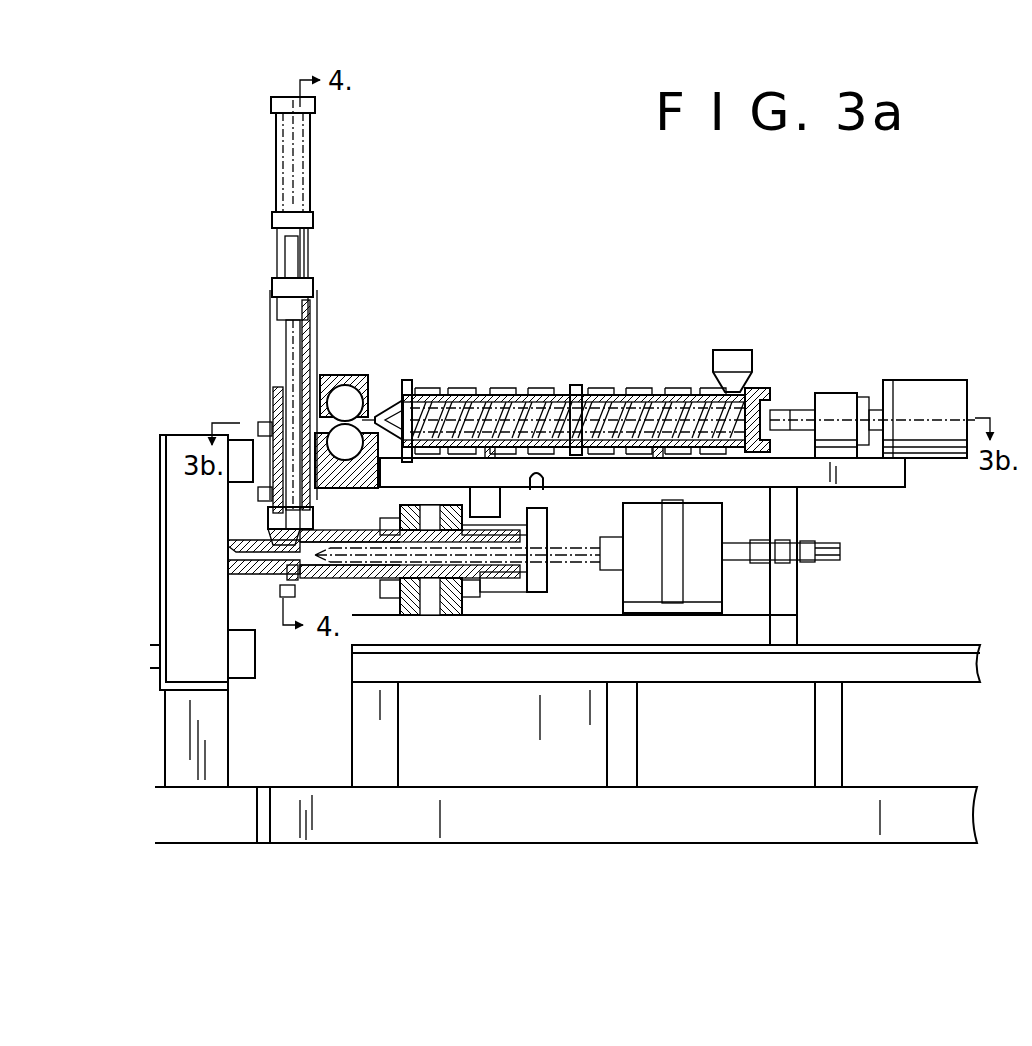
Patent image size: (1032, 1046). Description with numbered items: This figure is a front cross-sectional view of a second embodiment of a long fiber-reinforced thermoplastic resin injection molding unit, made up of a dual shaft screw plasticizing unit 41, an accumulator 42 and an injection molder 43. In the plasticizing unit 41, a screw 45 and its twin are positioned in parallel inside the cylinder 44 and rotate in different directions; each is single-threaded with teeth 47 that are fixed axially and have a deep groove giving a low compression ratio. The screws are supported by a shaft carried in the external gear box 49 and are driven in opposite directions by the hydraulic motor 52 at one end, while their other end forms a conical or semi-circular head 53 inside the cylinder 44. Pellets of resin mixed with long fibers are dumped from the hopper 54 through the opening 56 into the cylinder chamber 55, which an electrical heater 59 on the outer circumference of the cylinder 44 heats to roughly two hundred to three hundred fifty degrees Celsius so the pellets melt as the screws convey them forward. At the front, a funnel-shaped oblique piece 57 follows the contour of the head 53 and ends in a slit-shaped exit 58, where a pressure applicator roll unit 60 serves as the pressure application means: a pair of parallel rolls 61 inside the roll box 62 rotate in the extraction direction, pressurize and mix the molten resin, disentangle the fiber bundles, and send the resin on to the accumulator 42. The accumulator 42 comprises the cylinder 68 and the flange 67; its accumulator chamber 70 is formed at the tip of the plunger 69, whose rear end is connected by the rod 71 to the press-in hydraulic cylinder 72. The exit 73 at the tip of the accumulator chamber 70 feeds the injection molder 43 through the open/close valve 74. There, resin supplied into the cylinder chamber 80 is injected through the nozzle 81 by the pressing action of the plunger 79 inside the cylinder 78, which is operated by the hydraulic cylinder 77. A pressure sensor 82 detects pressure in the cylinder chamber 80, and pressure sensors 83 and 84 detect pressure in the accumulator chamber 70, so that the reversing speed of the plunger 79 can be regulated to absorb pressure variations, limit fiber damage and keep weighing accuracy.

The dual shaft screw plasticizing unit 41 is at (616, 322).
The accumulator 42 is at (250, 320).
The injection molder 43 is at (345, 584).
The cylinder 44 is at (556, 395).
The screw 45 is at (478, 395).
The teeth 47 is at (635, 400).
The gear box 49 is at (836, 393).
The hydraulic motor 52 is at (935, 380).
The head 53 is at (432, 400).
The hopper 54 is at (740, 352).
The cylinder chamber 55 is at (734, 447).
The opening 56 is at (757, 402).
The oblique piece 57 is at (386, 418).
The slit-shaped exit 58 is at (378, 488).
The electrical heater 59 is at (510, 395).
The pressure applicator roll unit 60 is at (380, 378).
The roll 61 is at (358, 400).
The roll box 62 is at (350, 398).
The flange 67 is at (335, 395).
The cylinder 68 is at (278, 392).
The plunger 69 is at (286, 312).
The accumulator chamber 70 is at (292, 425).
The rod 71 is at (288, 256).
The press-in hydraulic cylinder 72 is at (276, 152).
The exit 73 is at (268, 511).
The open/close valve 74 is at (262, 526).
The hydraulic cylinder 77 is at (650, 615).
The cylinder 78 is at (420, 616).
The plunger 79 is at (530, 592).
The cylinder chamber 80 is at (290, 593).
The nozzle 81 is at (236, 578).
The pressure sensor 82 is at (282, 590).
The pressure sensor 83 is at (258, 428).
The pressure sensor 84 is at (258, 493).